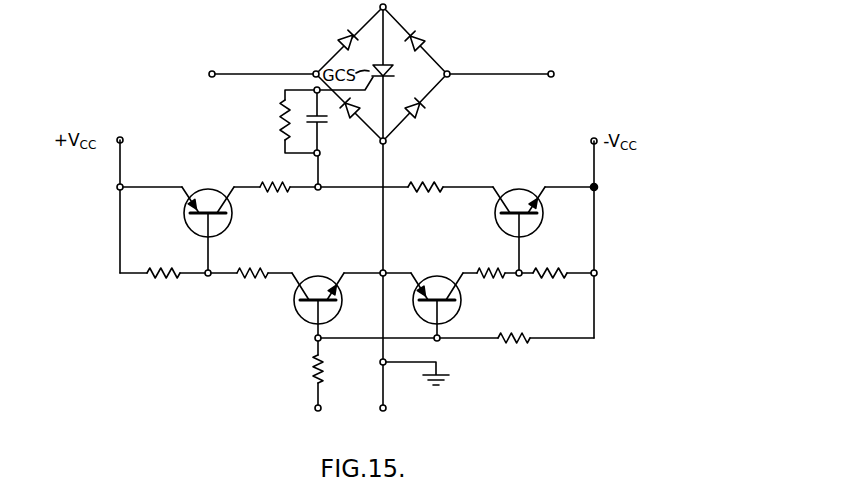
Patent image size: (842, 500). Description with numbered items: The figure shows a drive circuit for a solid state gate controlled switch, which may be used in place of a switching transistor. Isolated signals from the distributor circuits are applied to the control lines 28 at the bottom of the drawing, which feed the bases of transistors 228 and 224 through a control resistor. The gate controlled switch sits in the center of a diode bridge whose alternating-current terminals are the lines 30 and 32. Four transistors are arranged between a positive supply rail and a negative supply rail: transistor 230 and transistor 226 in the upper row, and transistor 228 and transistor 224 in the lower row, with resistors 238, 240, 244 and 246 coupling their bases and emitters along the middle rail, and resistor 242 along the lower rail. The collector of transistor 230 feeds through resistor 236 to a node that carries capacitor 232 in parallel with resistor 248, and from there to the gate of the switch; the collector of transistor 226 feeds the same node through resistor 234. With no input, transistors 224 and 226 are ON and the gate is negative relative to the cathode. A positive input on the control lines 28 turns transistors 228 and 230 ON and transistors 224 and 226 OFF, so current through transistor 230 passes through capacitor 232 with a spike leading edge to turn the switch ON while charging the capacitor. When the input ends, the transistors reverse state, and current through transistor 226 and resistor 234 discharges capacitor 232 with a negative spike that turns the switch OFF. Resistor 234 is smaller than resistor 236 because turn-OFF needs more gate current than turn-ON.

The control lines 28 is at (322, 405).
The input terminal line 30 is at (212, 71).
The output terminal line 32 is at (549, 72).
The transistor 224 is at (428, 276).
The transistor 226 is at (532, 190).
The transistor 228 is at (320, 276).
The transistor 230 is at (216, 190).
The capacitor 232 is at (329, 122).
The resistor 234 is at (435, 181).
The resistor 236 is at (285, 180).
The resistor 238 is at (167, 267).
The resistor 240 is at (250, 267).
The resistor 242 is at (512, 334).
The resistor 244 is at (489, 267).
The resistor 246 is at (556, 267).
The resistor 248 is at (281, 129).